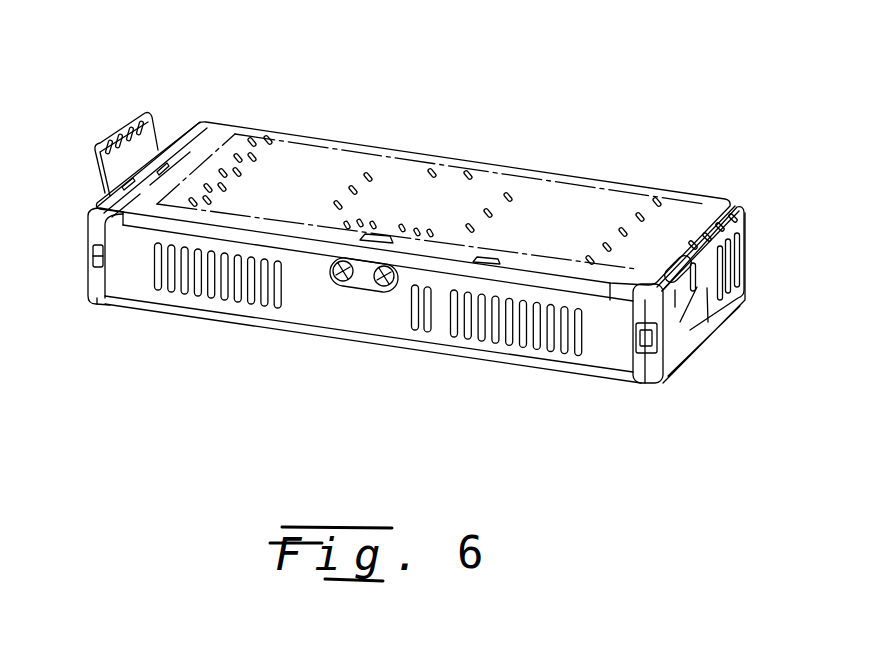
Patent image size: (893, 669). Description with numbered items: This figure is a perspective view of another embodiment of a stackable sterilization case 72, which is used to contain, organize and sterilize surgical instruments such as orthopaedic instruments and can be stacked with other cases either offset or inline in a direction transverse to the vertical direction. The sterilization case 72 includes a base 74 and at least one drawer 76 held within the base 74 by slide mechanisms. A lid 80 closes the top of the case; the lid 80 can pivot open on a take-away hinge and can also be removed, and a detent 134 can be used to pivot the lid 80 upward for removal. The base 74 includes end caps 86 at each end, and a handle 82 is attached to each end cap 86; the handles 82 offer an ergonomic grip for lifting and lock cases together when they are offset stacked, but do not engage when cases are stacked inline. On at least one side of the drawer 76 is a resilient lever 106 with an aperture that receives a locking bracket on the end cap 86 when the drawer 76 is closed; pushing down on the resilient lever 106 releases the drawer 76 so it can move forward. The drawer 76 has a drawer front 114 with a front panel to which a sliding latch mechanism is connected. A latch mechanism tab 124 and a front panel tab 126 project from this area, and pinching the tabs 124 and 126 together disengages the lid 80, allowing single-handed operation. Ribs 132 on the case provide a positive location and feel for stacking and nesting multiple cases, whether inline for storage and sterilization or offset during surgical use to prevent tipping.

The sterilization case 72 is at (550, 84).
The base 74 is at (747, 300).
The drawer 76 is at (425, 318).
The lid 80 is at (228, 137).
The handle 82 is at (133, 113).
The end cap 86 is at (95, 206).
The resilient lever 106 is at (97, 266).
The drawer front 114 is at (360, 322).
The latch mechanism tab 124 is at (337, 278).
The front panel tab 126 is at (378, 286).
The rib 132 is at (196, 120).
The detent 134 is at (386, 236).